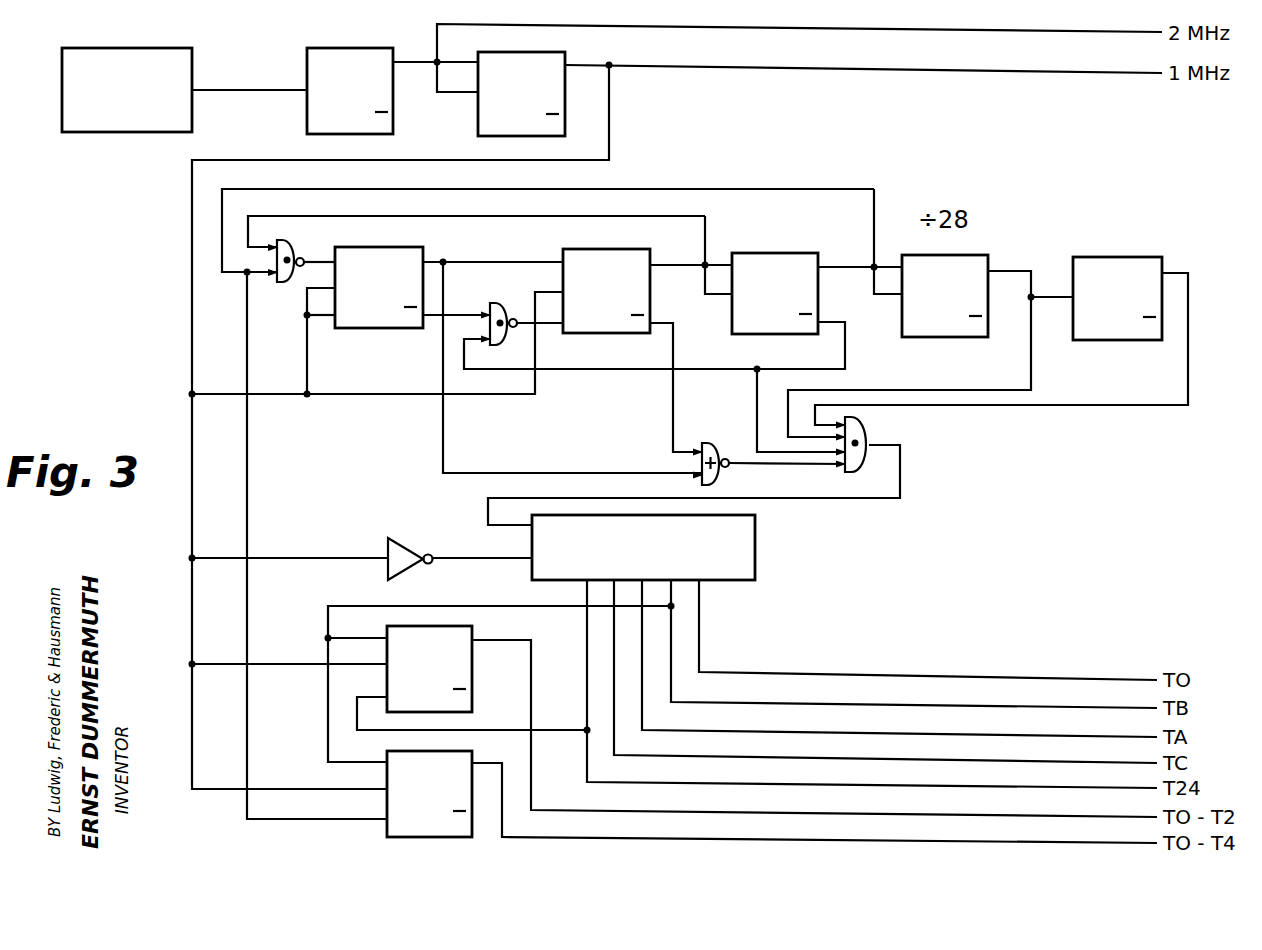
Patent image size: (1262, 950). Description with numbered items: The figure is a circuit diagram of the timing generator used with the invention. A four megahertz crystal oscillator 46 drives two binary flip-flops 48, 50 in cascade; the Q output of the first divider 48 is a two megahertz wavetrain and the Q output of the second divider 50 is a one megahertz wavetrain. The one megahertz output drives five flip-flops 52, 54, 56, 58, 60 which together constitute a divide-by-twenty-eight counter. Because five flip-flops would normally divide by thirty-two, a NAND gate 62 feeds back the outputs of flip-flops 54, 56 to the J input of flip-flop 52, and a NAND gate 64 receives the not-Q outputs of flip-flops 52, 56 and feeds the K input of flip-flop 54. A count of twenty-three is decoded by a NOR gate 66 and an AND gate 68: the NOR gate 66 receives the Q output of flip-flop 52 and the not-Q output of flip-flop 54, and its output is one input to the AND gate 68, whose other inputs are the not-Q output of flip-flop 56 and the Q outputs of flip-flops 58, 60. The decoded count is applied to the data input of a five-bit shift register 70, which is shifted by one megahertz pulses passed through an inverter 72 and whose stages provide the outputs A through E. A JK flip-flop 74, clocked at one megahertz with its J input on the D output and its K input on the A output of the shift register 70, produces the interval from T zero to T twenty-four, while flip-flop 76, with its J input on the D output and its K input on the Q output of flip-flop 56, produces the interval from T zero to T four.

The crystal oscillator 46 is at (178, 38).
The first divider flip-flop 48 is at (380, 38).
The second divider flip-flop 50 is at (563, 52).
The flip-flop 52 is at (398, 237).
The flip-flop 54 is at (612, 248).
The flip-flop 56 is at (796, 243).
The flip-flop 58 is at (975, 254).
The flip-flop 60 is at (1138, 256).
The NAND gate 62 is at (300, 230).
The NAND gate 64 is at (512, 293).
The NOR gate 66 is at (722, 432).
The AND gate 68 is at (876, 420).
The five-bit shift register 70 is at (757, 536).
The inverter 72 is at (410, 528).
The flip-flop 74 is at (472, 632).
The flip-flop 76 is at (472, 756).